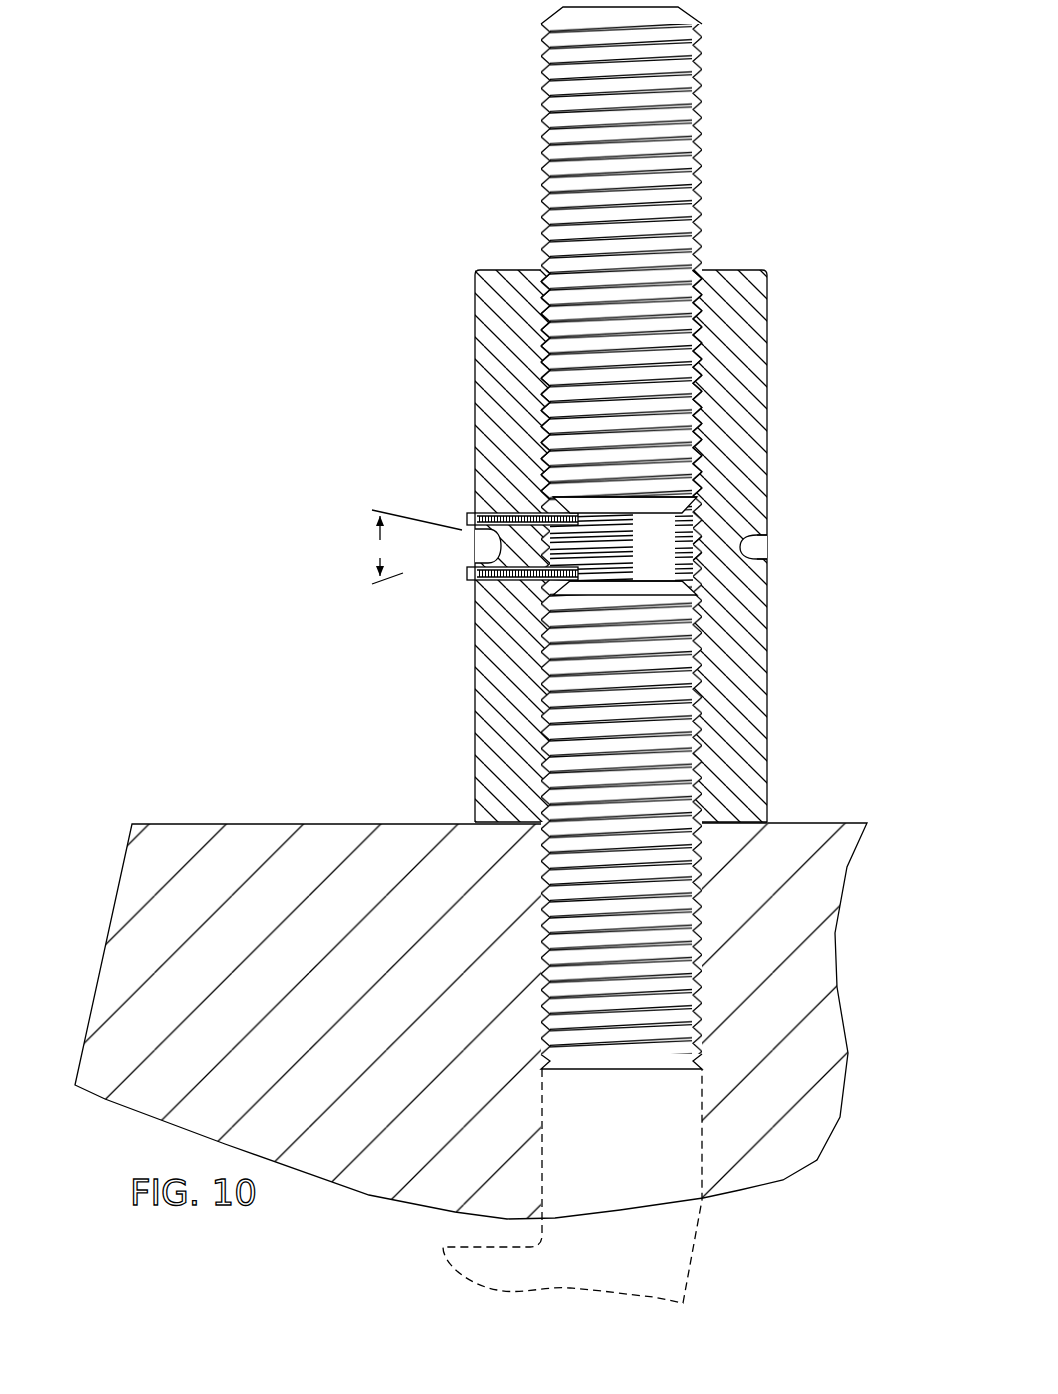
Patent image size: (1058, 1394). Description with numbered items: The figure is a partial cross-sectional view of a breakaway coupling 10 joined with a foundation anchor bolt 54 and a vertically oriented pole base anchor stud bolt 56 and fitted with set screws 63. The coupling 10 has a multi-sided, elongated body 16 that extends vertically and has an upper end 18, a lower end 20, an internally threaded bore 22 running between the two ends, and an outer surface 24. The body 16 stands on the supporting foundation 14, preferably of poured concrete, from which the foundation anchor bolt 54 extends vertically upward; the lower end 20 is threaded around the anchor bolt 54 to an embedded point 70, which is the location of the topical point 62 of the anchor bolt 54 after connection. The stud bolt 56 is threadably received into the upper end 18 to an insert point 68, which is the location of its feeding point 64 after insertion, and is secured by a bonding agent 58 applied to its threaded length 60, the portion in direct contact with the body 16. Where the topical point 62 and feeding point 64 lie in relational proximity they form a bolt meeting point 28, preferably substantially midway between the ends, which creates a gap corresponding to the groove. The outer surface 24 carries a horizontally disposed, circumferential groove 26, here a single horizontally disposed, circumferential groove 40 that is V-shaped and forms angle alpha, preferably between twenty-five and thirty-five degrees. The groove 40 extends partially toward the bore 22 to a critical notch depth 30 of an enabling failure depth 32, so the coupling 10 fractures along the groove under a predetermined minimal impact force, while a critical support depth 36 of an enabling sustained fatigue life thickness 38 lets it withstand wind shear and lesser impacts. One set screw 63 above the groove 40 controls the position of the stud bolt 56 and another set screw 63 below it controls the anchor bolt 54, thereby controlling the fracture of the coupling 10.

The breakaway coupling 10 is at (586, 655).
The supporting foundation 14 is at (117, 874).
The multi-sided, elongated body 16 is at (616, 538).
The upper end 18 is at (475, 271).
The lower end 20 is at (470, 817).
The internally threaded bore 22 is at (575, 517).
The outer surface 24 is at (770, 728).
The horizontally disposed, circumferential groove 26 is at (470, 548).
The bolt meeting point 28 is at (577, 563).
The critical notch depth 30 is at (753, 529).
The enabling failure depth 32 is at (752, 564).
The critical support depth 36 is at (715, 534).
The enabling sustained fatigue life thickness 38 is at (720, 561).
The single horizontally disposed, circumferential groove 40 is at (779, 542).
The foundation anchor bolt 54 is at (709, 937).
The vertically oriented pole base anchor stud bolt 56 is at (707, 138).
The bonding agent 58 is at (704, 367).
The threaded length 60 is at (536, 352).
The topical point 62 is at (665, 583).
The set screw 63 is at (462, 506).
The feeding point 64 is at (638, 502).
The insert point 68 is at (590, 502).
The embedded point 70 is at (602, 583).